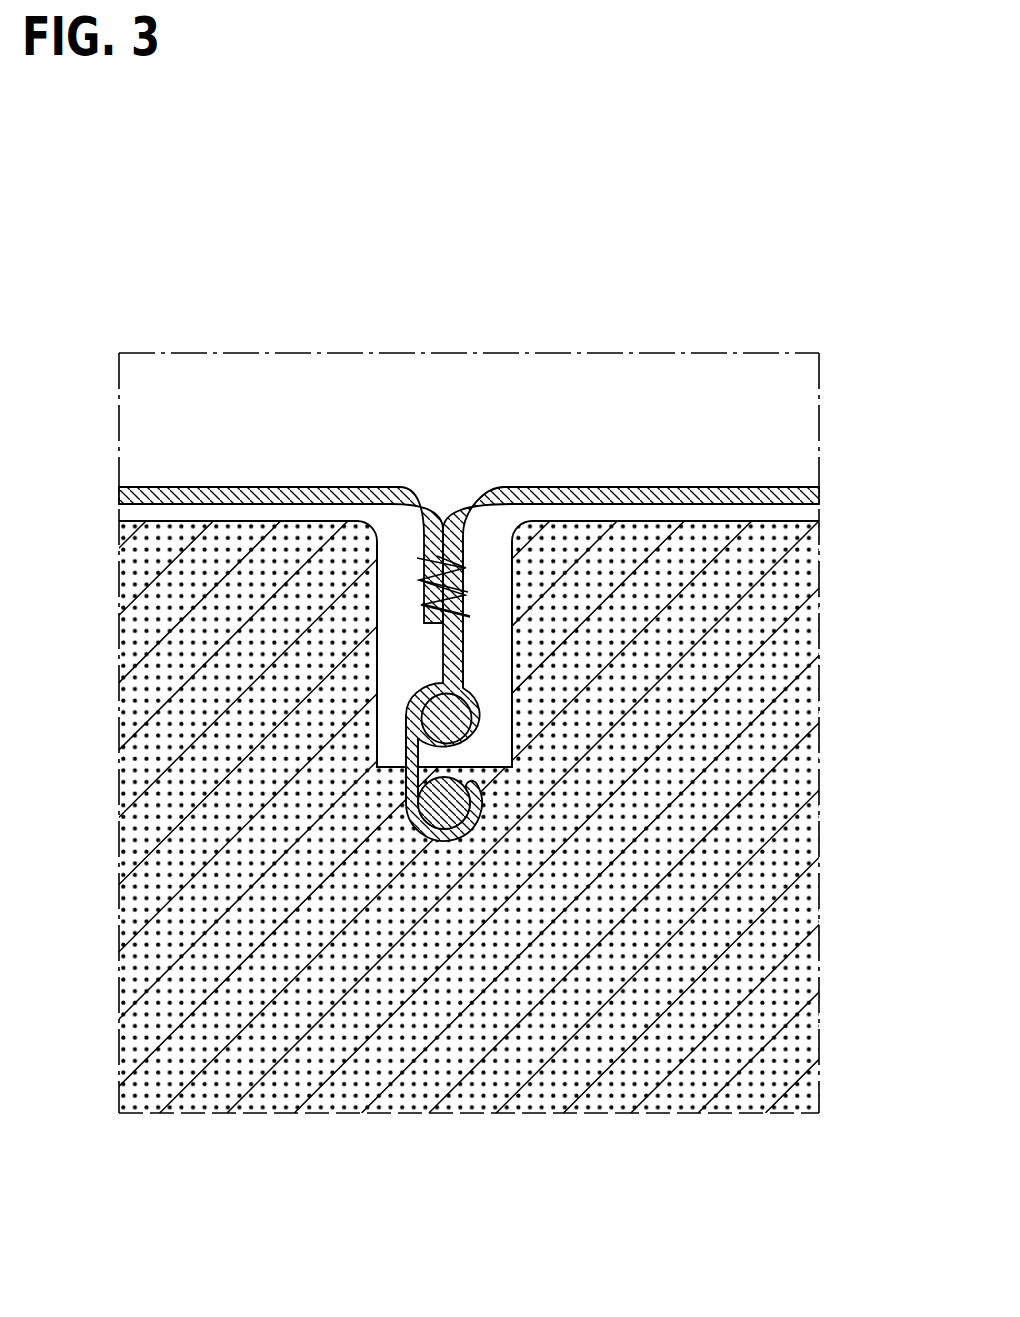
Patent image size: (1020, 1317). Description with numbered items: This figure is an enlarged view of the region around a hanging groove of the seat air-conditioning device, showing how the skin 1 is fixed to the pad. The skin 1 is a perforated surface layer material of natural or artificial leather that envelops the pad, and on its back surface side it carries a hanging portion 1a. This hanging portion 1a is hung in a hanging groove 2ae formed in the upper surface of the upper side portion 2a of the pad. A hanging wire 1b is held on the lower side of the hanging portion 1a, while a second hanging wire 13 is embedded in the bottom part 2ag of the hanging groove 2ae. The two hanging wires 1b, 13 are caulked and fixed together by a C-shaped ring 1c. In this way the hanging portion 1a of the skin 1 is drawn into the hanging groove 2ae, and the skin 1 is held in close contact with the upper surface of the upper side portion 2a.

The skin 1 is at (262, 487).
The hanging portion 1a is at (458, 634).
The hanging wire 1b is at (482, 717).
The C-shaped ring 1c is at (405, 743).
The hanging wire 13 is at (470, 796).
The upper side portion 2a is at (505, 1087).
The bottom part 2ag is at (473, 767).
The hanging groove 2ae is at (397, 767).